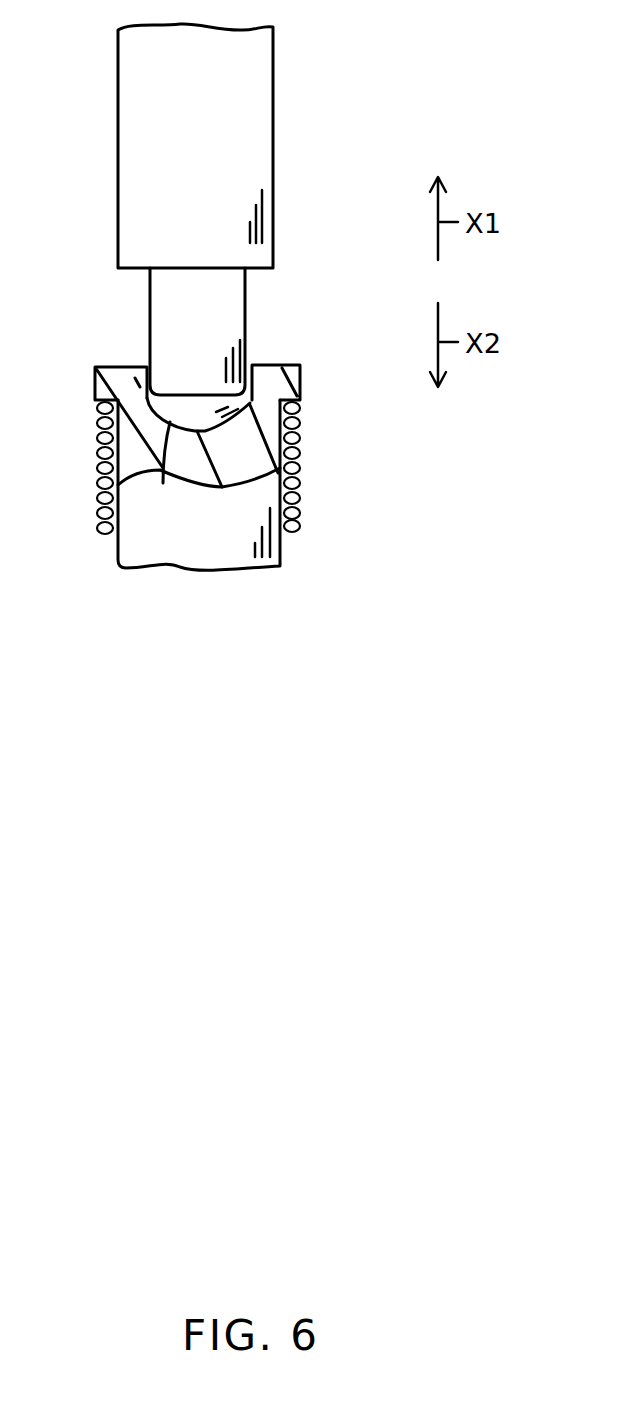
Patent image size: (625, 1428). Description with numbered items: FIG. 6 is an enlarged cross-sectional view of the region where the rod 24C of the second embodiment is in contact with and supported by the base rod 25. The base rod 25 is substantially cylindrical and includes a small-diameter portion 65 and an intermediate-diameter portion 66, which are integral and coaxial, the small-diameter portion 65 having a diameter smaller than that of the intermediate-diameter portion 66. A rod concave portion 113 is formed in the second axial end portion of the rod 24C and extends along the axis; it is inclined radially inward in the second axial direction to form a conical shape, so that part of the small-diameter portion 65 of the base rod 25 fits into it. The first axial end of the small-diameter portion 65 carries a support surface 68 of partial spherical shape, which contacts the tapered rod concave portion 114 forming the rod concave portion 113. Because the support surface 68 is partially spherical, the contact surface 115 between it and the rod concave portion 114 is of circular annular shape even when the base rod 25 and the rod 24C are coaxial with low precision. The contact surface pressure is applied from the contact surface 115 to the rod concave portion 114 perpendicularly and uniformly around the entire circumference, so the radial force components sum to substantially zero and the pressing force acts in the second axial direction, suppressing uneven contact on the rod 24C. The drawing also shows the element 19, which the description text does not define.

The base rod 25 is at (257, 56).
The intermediate-diameter portion 66 is at (260, 152).
The small-diameter portion 65 is at (228, 298).
The rod concave portion 113 is at (250, 368).
The rod concave portion 114 is at (140, 374).
The support surface 68 is at (205, 429).
The contact surface 115 is at (163, 472).
The spring 19 is at (302, 518).
The rod 24C is at (257, 563).